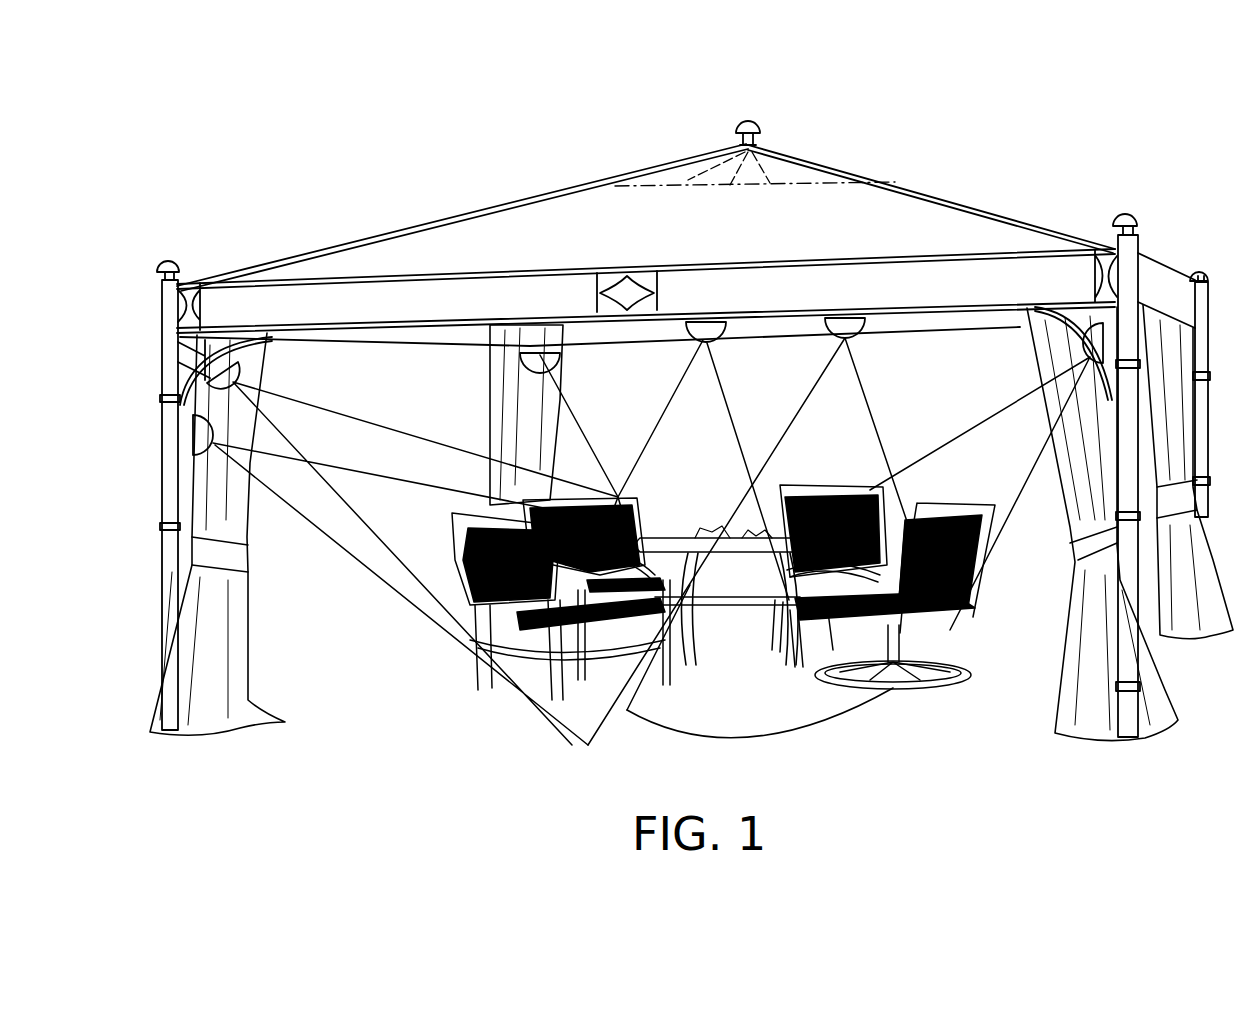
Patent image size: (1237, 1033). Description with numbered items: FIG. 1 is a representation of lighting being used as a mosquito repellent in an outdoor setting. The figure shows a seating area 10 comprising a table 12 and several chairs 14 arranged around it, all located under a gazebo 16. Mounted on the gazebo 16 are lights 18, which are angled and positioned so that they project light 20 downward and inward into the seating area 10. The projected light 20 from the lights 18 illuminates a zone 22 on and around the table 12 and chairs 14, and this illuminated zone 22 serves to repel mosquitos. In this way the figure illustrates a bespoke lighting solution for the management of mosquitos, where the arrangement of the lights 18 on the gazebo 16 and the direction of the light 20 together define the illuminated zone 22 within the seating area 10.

The seating area 10 is at (510, 698).
The table 12 is at (731, 563).
The chairs 14 is at (956, 594).
The gazebo 16 is at (1128, 662).
The lights 18 is at (845, 328).
The light 20 is at (879, 414).
The illuminated zone 22 is at (756, 711).